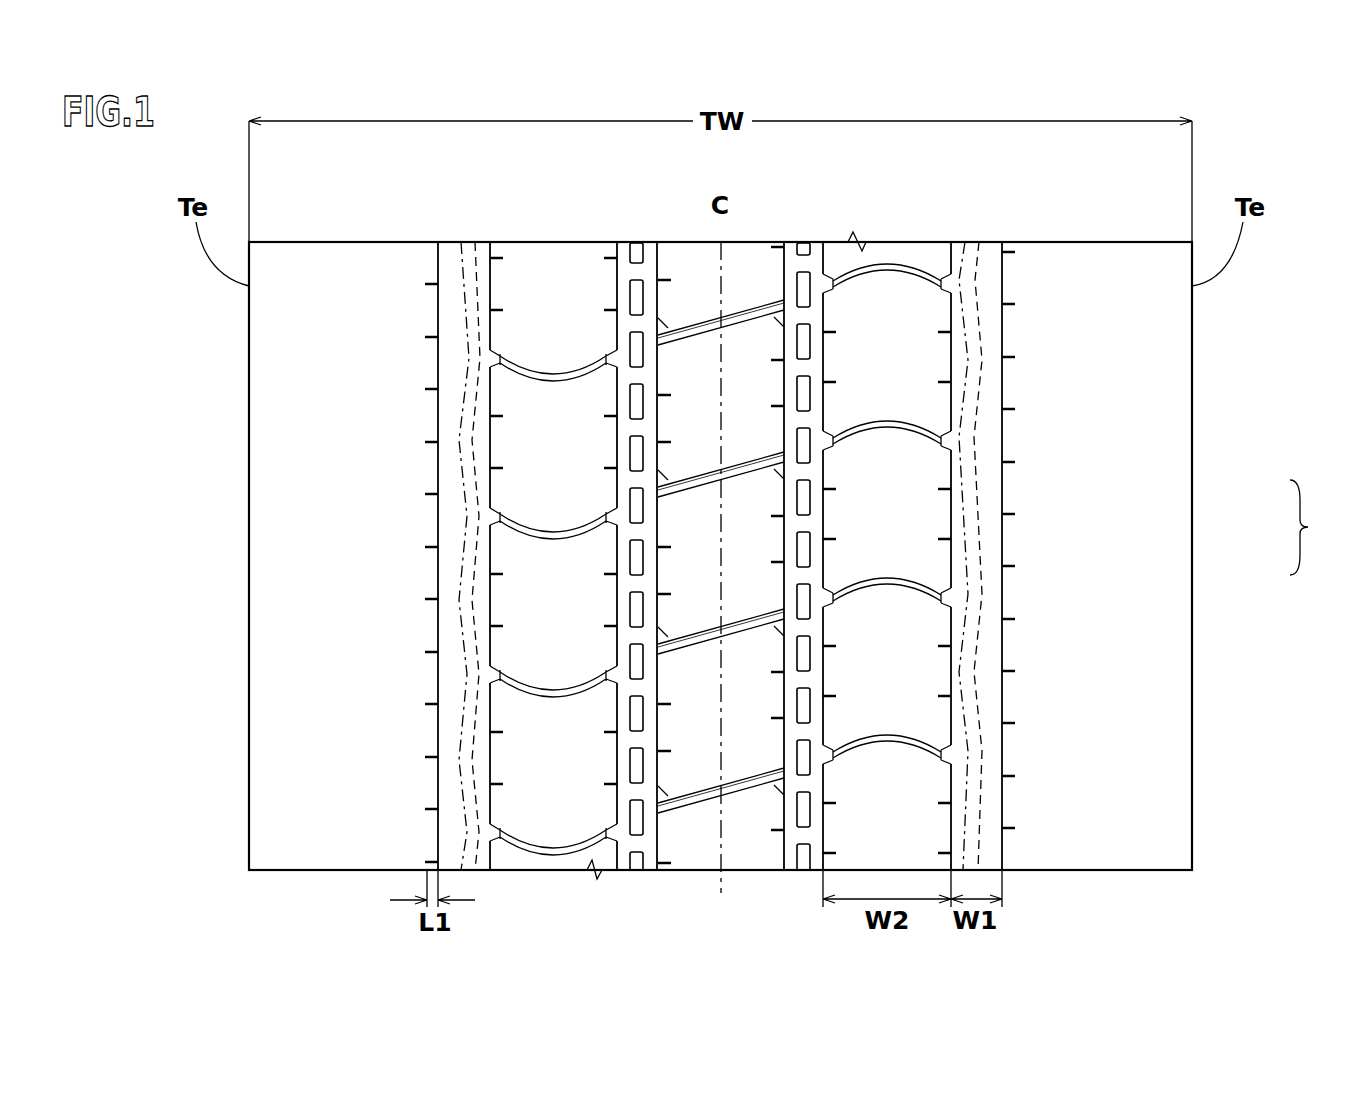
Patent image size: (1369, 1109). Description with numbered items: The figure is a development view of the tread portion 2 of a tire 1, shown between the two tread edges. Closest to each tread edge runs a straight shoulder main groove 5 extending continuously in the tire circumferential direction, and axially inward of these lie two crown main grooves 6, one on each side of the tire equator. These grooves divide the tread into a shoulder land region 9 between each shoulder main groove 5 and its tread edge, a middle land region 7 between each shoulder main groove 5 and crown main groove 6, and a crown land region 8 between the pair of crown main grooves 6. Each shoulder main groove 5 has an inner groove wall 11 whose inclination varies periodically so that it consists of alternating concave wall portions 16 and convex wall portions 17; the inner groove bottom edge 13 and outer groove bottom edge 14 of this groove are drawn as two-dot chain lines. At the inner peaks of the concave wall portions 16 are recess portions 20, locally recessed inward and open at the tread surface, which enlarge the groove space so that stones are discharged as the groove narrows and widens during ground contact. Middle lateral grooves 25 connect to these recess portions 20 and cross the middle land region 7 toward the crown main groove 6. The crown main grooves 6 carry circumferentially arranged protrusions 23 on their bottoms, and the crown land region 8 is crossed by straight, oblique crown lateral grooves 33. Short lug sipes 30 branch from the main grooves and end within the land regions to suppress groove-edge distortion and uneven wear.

The tire 1 is at (746, 242).
The tread portion 2 is at (922, 242).
The shoulder main groove 5 is at (453, 268).
The crown main groove 6 is at (649, 280).
The middle land region 7 is at (546, 288).
The crown land region 8 is at (692, 274).
The shoulder land region 9 is at (333, 292).
The inner groove wall 11 is at (1145, 556).
The inner groove bottom edge 13 is at (470, 432).
The outer groove bottom edge 14 is at (470, 347).
The concave wall portion 16 is at (950, 593).
The convex wall portion 17 is at (957, 520).
The recess portion 20 is at (497, 518).
The protrusion 23 is at (637, 822).
The middle lateral groove 25 is at (556, 527).
The lug sipe 30 is at (437, 547).
The crown lateral groove 33 is at (733, 790).